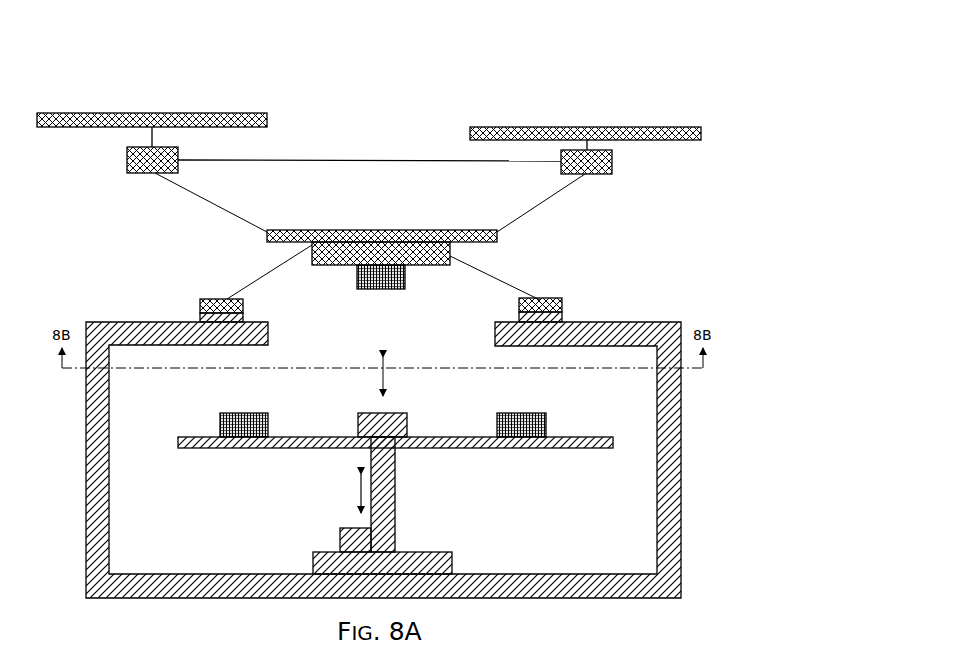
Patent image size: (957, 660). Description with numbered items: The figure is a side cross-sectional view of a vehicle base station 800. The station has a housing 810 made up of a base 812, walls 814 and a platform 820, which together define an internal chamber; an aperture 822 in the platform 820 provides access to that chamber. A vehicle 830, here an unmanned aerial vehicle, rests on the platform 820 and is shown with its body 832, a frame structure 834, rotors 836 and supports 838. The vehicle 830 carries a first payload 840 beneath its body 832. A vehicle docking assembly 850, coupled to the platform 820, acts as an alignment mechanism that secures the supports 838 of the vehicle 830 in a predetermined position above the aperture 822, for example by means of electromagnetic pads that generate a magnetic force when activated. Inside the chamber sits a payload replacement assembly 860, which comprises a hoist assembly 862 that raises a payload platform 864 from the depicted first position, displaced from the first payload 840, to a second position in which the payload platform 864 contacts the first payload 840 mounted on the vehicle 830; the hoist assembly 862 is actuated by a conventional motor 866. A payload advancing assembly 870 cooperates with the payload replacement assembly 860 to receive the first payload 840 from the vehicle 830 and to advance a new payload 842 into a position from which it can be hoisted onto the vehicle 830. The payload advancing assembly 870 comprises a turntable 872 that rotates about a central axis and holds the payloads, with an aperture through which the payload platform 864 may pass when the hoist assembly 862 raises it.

The vehicle base station 800 is at (725, 298).
The housing 810 is at (85, 320).
The base 812 is at (497, 574).
The walls 814 is at (86, 450).
The platform 820 is at (650, 322).
The aperture 822 is at (313, 320).
The vehicle 830 is at (356, 124).
The body 832 is at (380, 230).
The frame structure 834 is at (380, 160).
The rotors 836 is at (58, 113).
The supports 838 is at (210, 299).
The first payload 840 is at (405, 272).
The new payload 842 is at (220, 420).
The vehicle docking assembly 850 is at (200, 318).
The payload replacement assembly 860 is at (408, 527).
The hoist assembly 862 is at (395, 490).
The payload platform 864 is at (405, 413).
The motor 866 is at (340, 540).
The payload advancing assembly 870 is at (177, 460).
The turntable 872 is at (258, 448).